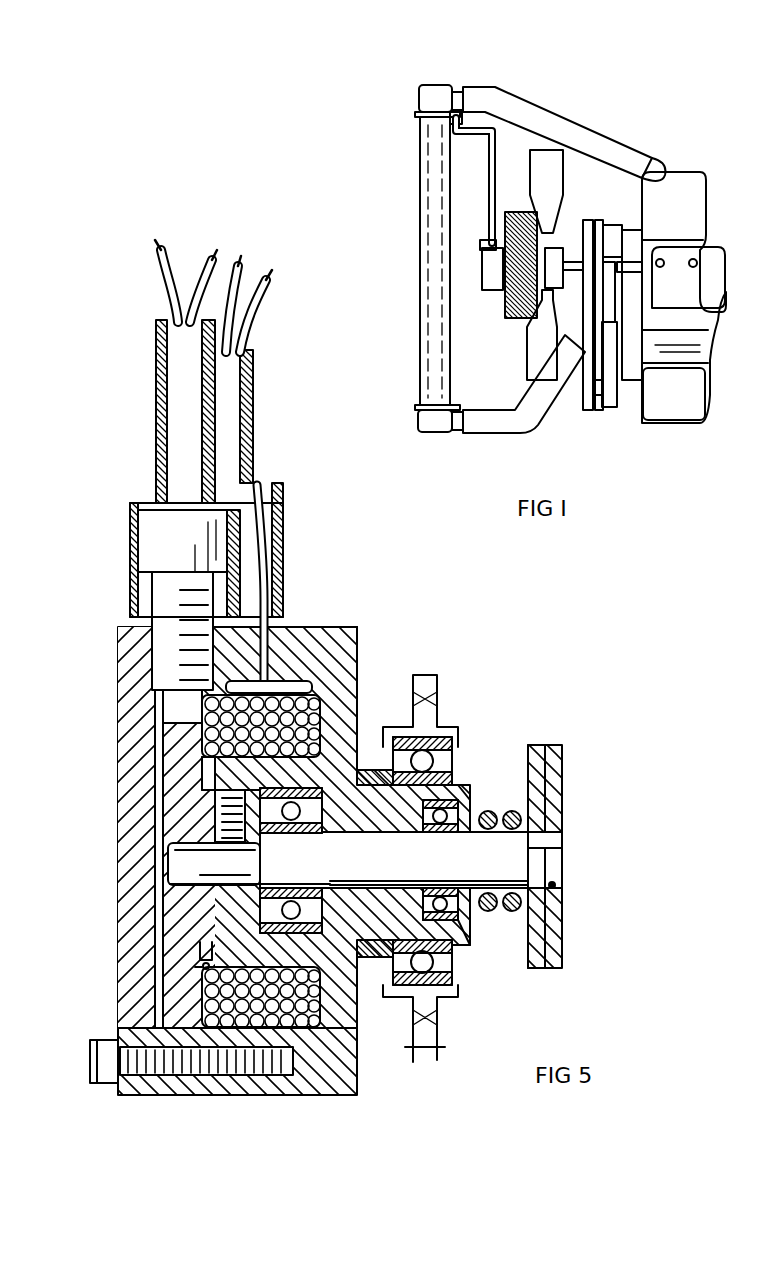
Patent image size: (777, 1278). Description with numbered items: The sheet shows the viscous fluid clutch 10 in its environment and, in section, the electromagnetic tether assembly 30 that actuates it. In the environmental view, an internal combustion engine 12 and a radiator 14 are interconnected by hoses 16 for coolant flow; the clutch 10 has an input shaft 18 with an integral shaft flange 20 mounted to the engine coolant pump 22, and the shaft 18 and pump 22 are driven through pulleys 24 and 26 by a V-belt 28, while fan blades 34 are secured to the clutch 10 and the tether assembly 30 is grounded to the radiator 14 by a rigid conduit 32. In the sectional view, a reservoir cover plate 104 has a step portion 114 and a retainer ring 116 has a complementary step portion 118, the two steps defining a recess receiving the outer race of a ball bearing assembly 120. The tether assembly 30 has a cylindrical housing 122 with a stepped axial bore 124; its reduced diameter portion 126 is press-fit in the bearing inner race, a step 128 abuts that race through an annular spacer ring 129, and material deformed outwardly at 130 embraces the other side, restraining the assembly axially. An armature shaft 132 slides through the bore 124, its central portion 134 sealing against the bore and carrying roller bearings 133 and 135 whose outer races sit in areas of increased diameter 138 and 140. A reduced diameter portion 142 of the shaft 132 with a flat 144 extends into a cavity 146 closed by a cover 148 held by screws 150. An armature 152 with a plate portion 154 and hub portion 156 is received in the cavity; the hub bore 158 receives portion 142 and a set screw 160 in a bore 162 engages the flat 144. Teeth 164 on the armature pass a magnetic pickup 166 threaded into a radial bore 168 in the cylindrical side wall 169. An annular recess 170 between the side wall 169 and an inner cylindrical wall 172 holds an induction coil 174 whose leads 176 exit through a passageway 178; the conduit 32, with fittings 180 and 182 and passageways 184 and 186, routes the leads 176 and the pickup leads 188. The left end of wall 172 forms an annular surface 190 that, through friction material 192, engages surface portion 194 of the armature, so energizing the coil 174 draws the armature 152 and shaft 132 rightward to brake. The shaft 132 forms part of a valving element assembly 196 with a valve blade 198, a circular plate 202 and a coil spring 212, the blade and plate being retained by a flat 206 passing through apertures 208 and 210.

In FIG. 1, the viscous fluid clutch 10 is at (502, 328).
In FIG. 1, the internal combustion engine 12 is at (697, 337).
In FIG. 1, the radiator 14 is at (418, 295).
In FIG. 1, the hoses 16 is at (520, 85).
In FIG. 1, the input shaft 18 is at (545, 265).
In FIG. 1, the shaft flange 20 is at (550, 285).
In FIG. 1, the engine coolant pump 22 is at (630, 230).
In FIG. 1, the pulley 24 is at (612, 225).
In FIG. 1, the pulley 26 is at (586, 410).
In FIG. 1, the V-belt 28 is at (598, 410).
In FIG. 1, the tether assembly 30 is at (488, 290).
In FIG. 5, the tether assembly 30 is at (84, 595).
In FIG. 1, the rigid conduit 32 is at (488, 200).
In FIG. 5, the rigid conduit 32 is at (137, 354).
In FIG. 1, the fan blades 34 is at (548, 150).
In FIG. 5, the reservoir cover plate 104 is at (413, 1050).
In FIG. 5, the step portion 114 is at (411, 1030).
In FIG. 5, the retainer ring 116 is at (437, 1056).
In FIG. 5, the step portion 118 is at (442, 1000).
In FIG. 5, the ball bearing assembly 120 is at (447, 965).
In FIG. 5, the housing 122 is at (338, 627).
In FIG. 5, the stepped axial bore 124 is at (395, 880).
In FIG. 5, the reduced diameter portion 126 is at (460, 796).
In FIG. 5, the step 128 is at (357, 652).
In FIG. 5, the annular spacer ring 129 is at (375, 770).
In FIG. 5, the deformed portion 130 is at (448, 750).
In FIG. 5, the armature shaft 132 is at (312, 870).
In FIG. 5, the roller bearing 133 is at (462, 806).
In FIG. 5, the central portion 134 is at (358, 828).
In FIG. 5, the roller bearing 135 is at (345, 882).
In FIG. 5, the area of increased diameter 138 is at (455, 935).
In FIG. 5, the area of increased diameter 140 is at (390, 975).
In FIG. 5, the reduced diameter portion 142 is at (182, 875).
In FIG. 5, the flat 144 is at (185, 852).
In FIG. 5, the cavity 146 is at (158, 735).
In FIG. 5, the cover 148 is at (118, 650).
In FIG. 5, the screws 150 is at (90, 1063).
In FIG. 5, the armature 152 is at (163, 930).
In FIG. 5, the plate portion 154 is at (160, 1018).
In FIG. 5, the hub portion 156 is at (205, 826).
In FIG. 5, the axial through bore 158 is at (163, 905).
In FIG. 5, the set screw 160 is at (218, 813).
In FIG. 5, the bore 162 is at (205, 792).
In FIG. 5, the teeth 164 is at (170, 702).
In FIG. 5, the magnetic pickup 166 is at (140, 545).
In FIG. 5, the radial bore 168 is at (152, 625).
In FIG. 5, the cylindrical side wall 169 is at (165, 1095).
In FIG. 5, the annular recess 170 is at (332, 1030).
In FIG. 5, the inner cylindrical wall 172 is at (200, 767).
In FIG. 5, the induction coil 174 is at (232, 1022).
In FIG. 5, the terminating leads 176 is at (246, 546).
In FIG. 5, the passageway 178 is at (276, 652).
In FIG. 1, the fitting 180 is at (456, 112).
In FIG. 1, the fitting 182 is at (480, 245).
In FIG. 5, the fitting 182 is at (130, 522).
In FIG. 5, the passageway 184 is at (272, 502).
In FIG. 5, the passageway 186 is at (156, 462).
In FIG. 5, the leads 188 is at (185, 400).
In FIG. 5, the annular surface 190 is at (198, 951).
In FIG. 5, the friction material 192 is at (203, 966).
In FIG. 5, the annular surface portion 194 is at (198, 973).
In FIG. 5, the valving element assembly 196 is at (612, 828).
In FIG. 5, the valve blade 198 is at (534, 745).
In FIG. 5, the circular plate 202 is at (562, 775).
In FIG. 5, the flat 206 is at (562, 849).
In FIG. 5, the aperture 208 is at (562, 866).
In FIG. 5, the aperture 210 is at (558, 886).
In FIG. 5, the coil spring 212 is at (514, 915).